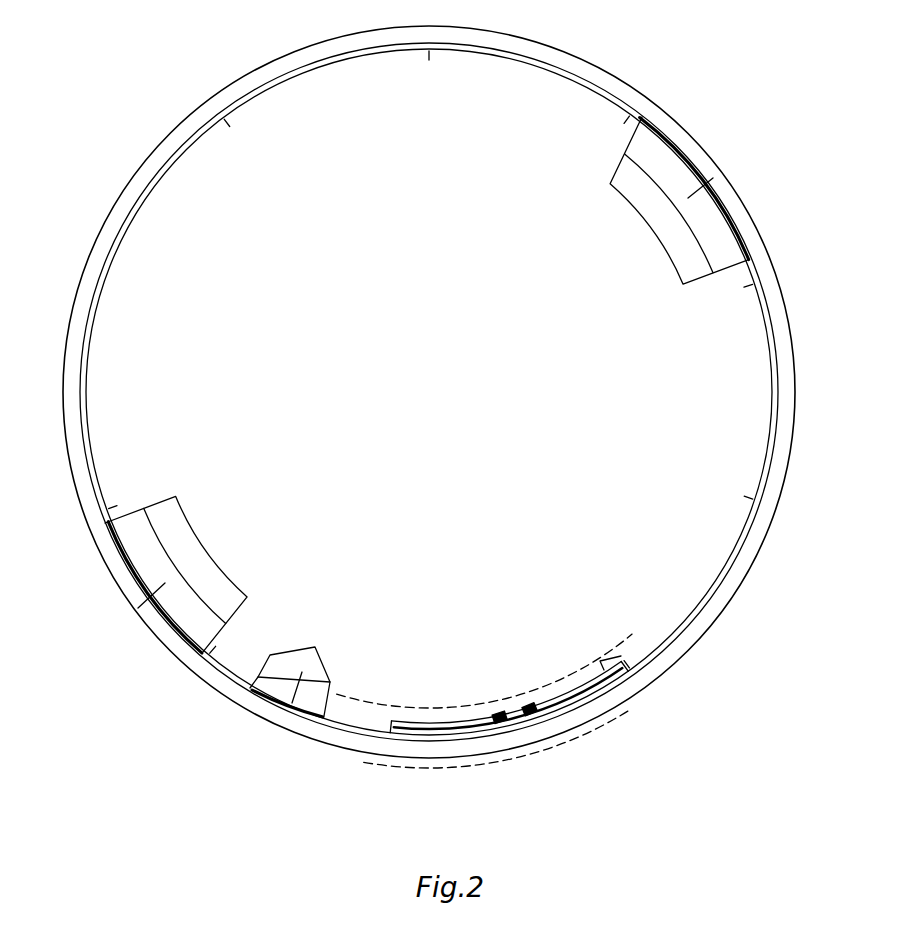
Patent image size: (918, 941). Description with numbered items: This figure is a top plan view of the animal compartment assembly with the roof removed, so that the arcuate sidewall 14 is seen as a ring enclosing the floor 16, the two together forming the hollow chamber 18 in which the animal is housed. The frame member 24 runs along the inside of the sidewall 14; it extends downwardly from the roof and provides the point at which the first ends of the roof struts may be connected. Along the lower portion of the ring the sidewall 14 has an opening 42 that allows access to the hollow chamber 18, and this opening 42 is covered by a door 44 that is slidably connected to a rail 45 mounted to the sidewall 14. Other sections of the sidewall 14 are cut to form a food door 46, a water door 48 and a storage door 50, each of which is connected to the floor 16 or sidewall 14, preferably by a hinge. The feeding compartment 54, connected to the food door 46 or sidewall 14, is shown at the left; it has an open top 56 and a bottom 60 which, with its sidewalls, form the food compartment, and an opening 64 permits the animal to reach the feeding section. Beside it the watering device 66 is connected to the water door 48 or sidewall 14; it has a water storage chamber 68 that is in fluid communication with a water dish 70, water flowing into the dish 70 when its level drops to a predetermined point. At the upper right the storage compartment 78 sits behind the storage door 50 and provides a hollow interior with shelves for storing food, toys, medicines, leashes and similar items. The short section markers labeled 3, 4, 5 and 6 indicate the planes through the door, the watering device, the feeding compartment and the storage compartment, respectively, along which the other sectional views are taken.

The sidewall 14 is at (197, 118).
The floor 16 is at (358, 156).
The hollow chamber 18 is at (433, 412).
The frame member 24 is at (104, 289).
The opening 42 is at (488, 666).
The door 44 is at (425, 737).
The rail 45 is at (580, 680).
The food door 46 is at (150, 600).
The water door 48 is at (268, 707).
The storage door 50 is at (730, 206).
The feeding compartment 54 is at (197, 428).
The open top 56 is at (135, 548).
The bottom 60 is at (125, 520).
The opening 64 is at (183, 500).
The watering device 66 is at (283, 640).
The water storage chamber 68 is at (253, 712).
The water dish 70 is at (322, 690).
The storage compartment 78 is at (603, 201).
The section line 3- 3 is at (632, 703).
The section line 4- 4 is at (308, 647).
The section line 5- 5 is at (213, 533).
The section line 6- 6 is at (725, 162).